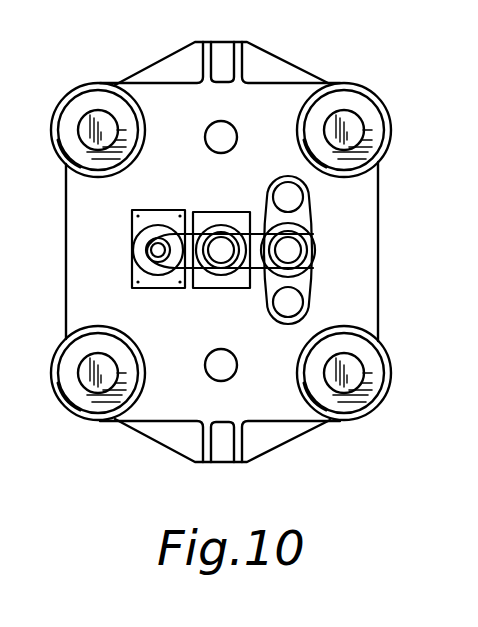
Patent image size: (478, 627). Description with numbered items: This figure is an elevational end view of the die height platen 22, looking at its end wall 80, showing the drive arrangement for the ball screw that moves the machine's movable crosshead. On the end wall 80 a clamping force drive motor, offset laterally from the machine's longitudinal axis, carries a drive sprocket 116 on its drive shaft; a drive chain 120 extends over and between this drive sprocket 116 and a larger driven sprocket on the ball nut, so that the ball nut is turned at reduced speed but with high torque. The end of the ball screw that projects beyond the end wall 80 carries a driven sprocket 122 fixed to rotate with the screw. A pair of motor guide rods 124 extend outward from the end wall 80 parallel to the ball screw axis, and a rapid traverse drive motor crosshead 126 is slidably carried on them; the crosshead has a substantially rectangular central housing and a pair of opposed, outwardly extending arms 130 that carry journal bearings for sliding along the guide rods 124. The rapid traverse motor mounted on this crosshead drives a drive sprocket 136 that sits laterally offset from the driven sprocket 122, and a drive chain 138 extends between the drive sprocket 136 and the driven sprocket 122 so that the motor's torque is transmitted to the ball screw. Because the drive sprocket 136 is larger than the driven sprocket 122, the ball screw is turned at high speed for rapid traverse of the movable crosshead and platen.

The die height platen 22 is at (280, 57).
The end wall 80 is at (165, 100).
The drive sprocket 116 is at (147, 253).
The drive chain 120 is at (201, 211).
The driven sprocket 122 is at (207, 290).
The motor guide rods 124 is at (293, 197).
The rapid traverse drive motor crosshead 126 is at (313, 218).
The arms 130 is at (283, 178).
The drive sprocket 136 is at (298, 260).
The drive chain 138 is at (257, 270).